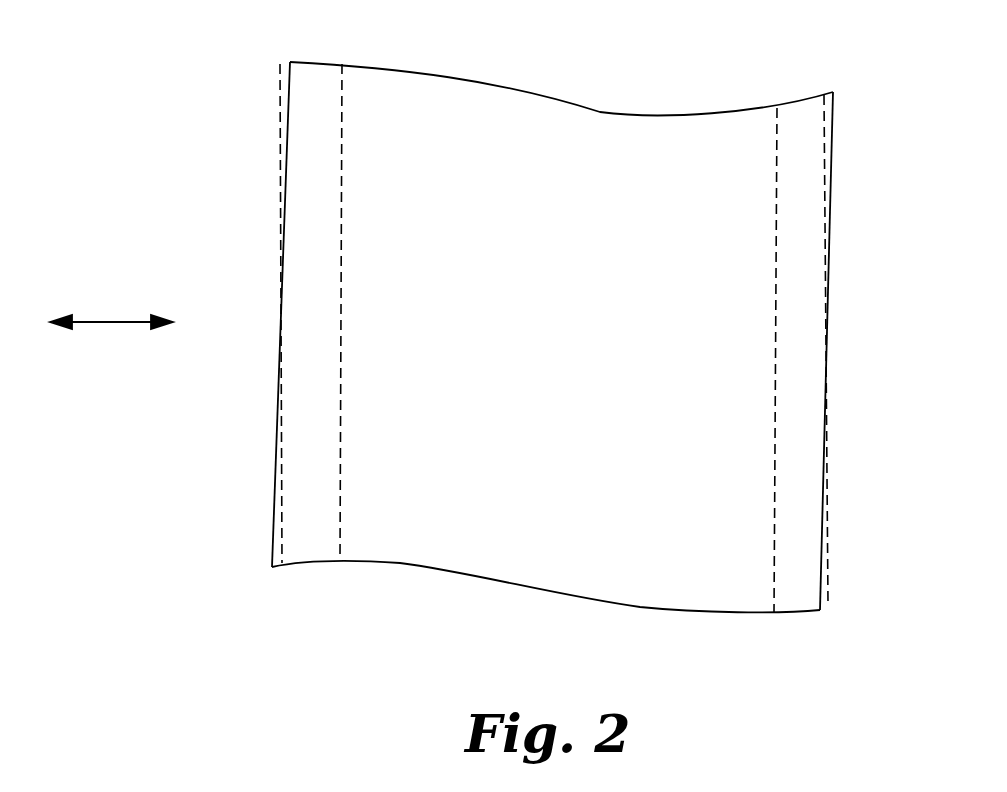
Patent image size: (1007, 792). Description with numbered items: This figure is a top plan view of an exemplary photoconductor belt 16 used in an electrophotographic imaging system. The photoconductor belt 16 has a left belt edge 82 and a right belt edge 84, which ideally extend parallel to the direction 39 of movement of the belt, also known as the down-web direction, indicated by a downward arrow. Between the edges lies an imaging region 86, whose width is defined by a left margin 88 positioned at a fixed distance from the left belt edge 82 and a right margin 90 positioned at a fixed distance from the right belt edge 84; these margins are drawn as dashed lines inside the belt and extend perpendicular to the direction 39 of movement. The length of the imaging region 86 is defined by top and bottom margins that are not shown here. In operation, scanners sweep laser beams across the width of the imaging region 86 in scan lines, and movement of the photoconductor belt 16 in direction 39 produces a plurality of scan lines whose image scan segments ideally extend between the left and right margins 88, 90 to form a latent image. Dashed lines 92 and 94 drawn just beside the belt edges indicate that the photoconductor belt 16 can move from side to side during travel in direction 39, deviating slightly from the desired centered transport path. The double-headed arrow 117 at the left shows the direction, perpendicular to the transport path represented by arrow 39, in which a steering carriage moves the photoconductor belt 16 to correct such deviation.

The photoconductor belt 16 is at (558, 339).
The direction of movement 39 is at (545, 520).
The left belt edge 82 is at (280, 308).
The right belt edge 84 is at (826, 354).
The imaging region 86 is at (593, 128).
The left margin 88 is at (340, 185).
The right margin 90 is at (777, 265).
The dashed line 92 is at (280, 117).
The dashed line 94 is at (826, 138).
The arrow 117 is at (101, 322).